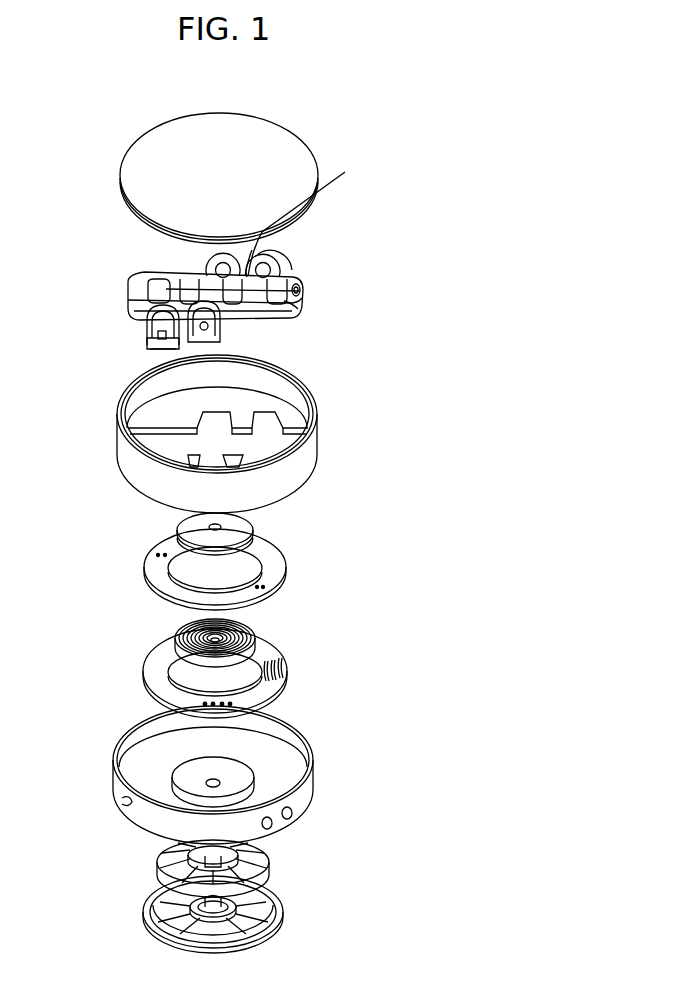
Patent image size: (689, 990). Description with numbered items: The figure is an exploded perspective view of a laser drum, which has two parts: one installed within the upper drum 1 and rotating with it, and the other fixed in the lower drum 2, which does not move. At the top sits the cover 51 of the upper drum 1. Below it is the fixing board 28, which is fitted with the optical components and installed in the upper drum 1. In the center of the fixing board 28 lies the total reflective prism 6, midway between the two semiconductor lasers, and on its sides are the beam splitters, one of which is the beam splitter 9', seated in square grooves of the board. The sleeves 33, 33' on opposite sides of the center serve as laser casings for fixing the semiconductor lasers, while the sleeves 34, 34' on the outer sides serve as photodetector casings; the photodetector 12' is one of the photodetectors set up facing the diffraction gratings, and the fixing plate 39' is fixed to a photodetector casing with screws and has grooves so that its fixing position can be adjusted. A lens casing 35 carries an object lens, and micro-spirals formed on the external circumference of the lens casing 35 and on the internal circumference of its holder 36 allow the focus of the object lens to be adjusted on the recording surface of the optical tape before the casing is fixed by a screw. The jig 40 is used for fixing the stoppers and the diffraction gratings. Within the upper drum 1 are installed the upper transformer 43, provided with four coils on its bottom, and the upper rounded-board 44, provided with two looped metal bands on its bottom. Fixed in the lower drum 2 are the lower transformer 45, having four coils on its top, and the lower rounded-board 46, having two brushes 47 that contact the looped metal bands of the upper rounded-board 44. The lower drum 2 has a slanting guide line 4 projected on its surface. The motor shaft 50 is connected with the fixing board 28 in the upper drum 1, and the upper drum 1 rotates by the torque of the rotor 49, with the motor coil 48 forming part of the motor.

The cover 51 is at (138, 150).
The jig 40 is at (313, 212).
The fixing board 28 is at (305, 276).
The sleeve 33 is at (150, 244).
The sleeve 34 is at (313, 239).
The total reflective prism 6 is at (203, 276).
The beam splitter 9' is at (155, 286).
The lens casing 35 is at (300, 288).
The holder 36 is at (292, 308).
The sleeve 34' is at (118, 325).
The fixing plate 39' is at (118, 351).
The photodetector 12' is at (117, 387).
The sleeve 33' is at (276, 335).
The upper drum 1 is at (312, 452).
The upper transformer 43 is at (180, 527).
The upper rounded-board 44 is at (281, 558).
The lower transformer 45 is at (180, 645).
The lower rounded-board 46 is at (150, 680).
The brushes 47 is at (282, 675).
The lower drum 2 is at (310, 732).
The slanting guide line 4 is at (128, 812).
The motor coil 48 is at (263, 860).
The rotor 49 is at (268, 930).
The motor shaft 50 is at (192, 916).